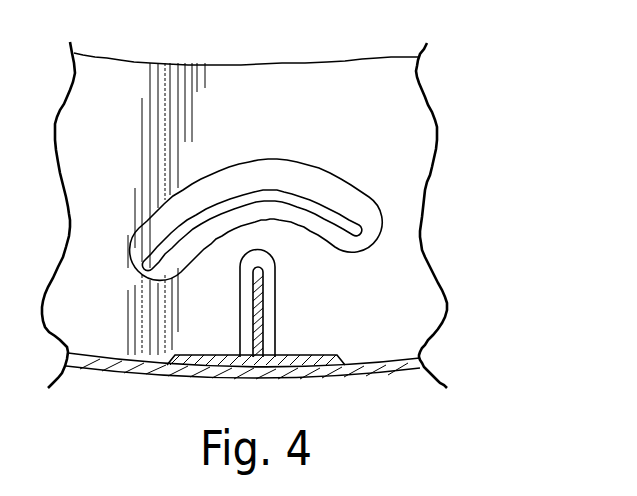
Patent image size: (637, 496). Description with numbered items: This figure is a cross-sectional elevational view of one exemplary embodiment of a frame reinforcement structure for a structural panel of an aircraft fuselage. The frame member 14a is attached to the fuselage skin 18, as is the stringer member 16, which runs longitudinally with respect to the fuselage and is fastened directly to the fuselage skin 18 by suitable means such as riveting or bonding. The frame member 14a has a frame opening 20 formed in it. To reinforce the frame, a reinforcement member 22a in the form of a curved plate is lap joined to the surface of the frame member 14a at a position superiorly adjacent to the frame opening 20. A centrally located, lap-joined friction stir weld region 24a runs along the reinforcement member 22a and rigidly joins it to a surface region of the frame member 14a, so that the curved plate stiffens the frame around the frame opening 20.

The frame member 14a is at (394, 102).
The reinforcement member 22a is at (218, 177).
The friction stir weld region 24a is at (343, 213).
The frame opening 20 is at (242, 292).
The stringer member 16 is at (265, 309).
The fuselage skin 18 is at (115, 368).